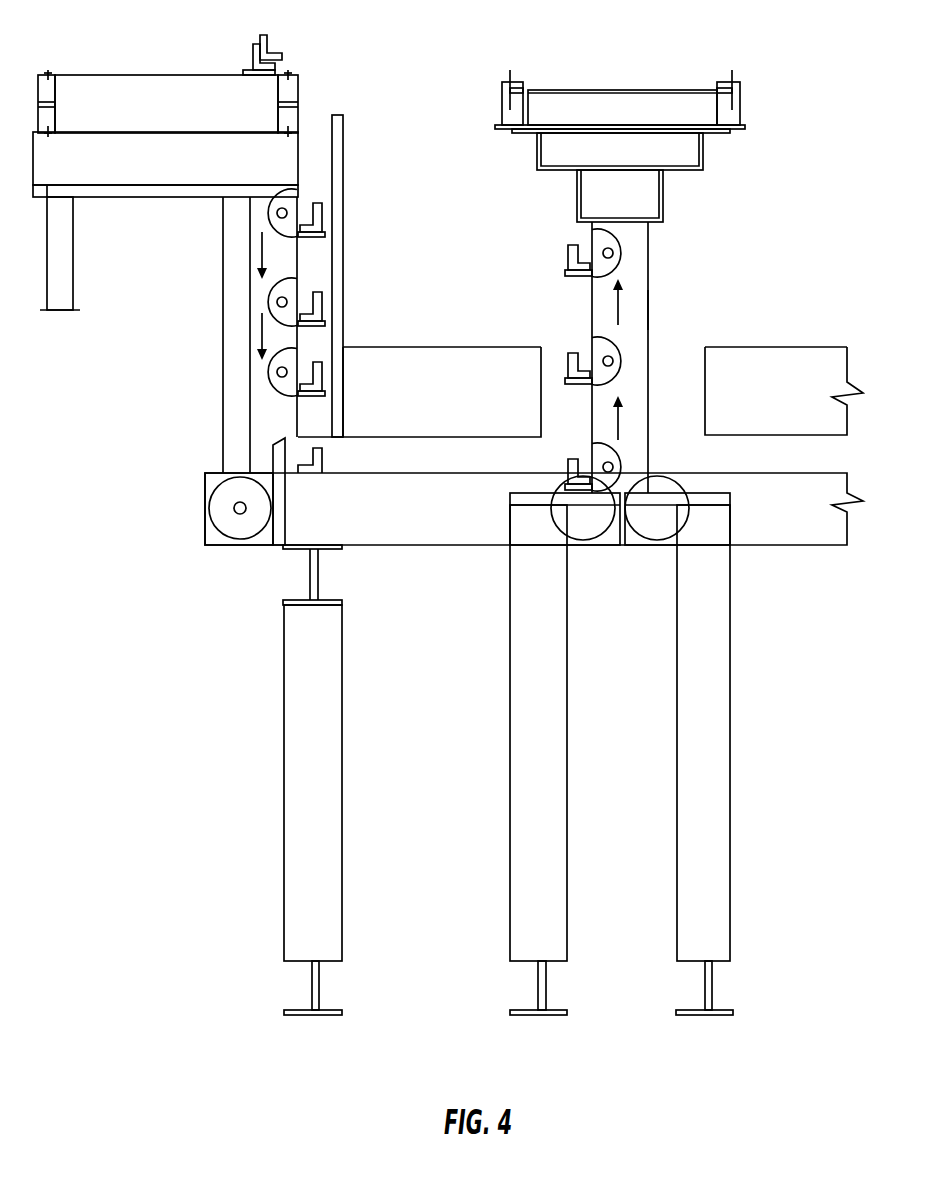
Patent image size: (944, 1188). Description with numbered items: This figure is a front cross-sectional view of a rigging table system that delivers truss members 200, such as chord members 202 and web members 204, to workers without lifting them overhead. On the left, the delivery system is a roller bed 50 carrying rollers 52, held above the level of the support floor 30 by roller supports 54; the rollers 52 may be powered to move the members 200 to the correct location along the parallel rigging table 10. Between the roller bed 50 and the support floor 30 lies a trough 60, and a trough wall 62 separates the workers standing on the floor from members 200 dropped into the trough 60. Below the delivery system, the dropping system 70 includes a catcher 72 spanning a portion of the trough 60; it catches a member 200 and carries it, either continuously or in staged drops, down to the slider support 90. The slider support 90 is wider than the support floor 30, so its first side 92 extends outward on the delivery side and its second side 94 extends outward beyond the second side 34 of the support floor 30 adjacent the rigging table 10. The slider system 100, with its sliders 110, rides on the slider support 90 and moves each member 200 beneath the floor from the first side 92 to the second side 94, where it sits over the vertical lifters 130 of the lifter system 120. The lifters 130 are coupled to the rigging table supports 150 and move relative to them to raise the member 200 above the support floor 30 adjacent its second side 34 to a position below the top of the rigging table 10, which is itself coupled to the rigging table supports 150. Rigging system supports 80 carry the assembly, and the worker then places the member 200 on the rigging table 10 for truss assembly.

The rigging table 10 is at (762, 94).
The support floor 30 is at (377, 347).
The second side of support floor 34 is at (495, 347).
The roller bed 50 is at (92, 138).
The rollers 52 is at (70, 78).
The roller supports 54 is at (73, 250).
The trough 60 is at (311, 142).
The trough wall 62 is at (340, 140).
The dropping system 70 is at (216, 275).
The catcher 72 is at (268, 302).
The rigging system supports 80 is at (328, 812).
The slider support 90 is at (465, 530).
The first side of slider support 92 is at (297, 487).
The second side of slider support 94 is at (515, 482).
The slider system 100 is at (188, 460).
The sliders 110 is at (272, 540).
The lifter system 120 is at (672, 258).
The vertical lifters 130 is at (621, 462).
The rigging table supports 150 is at (650, 310).
The members 200 is at (243, 68).
The chord members 202 is at (525, 85).
The web members 204 is at (632, 90).